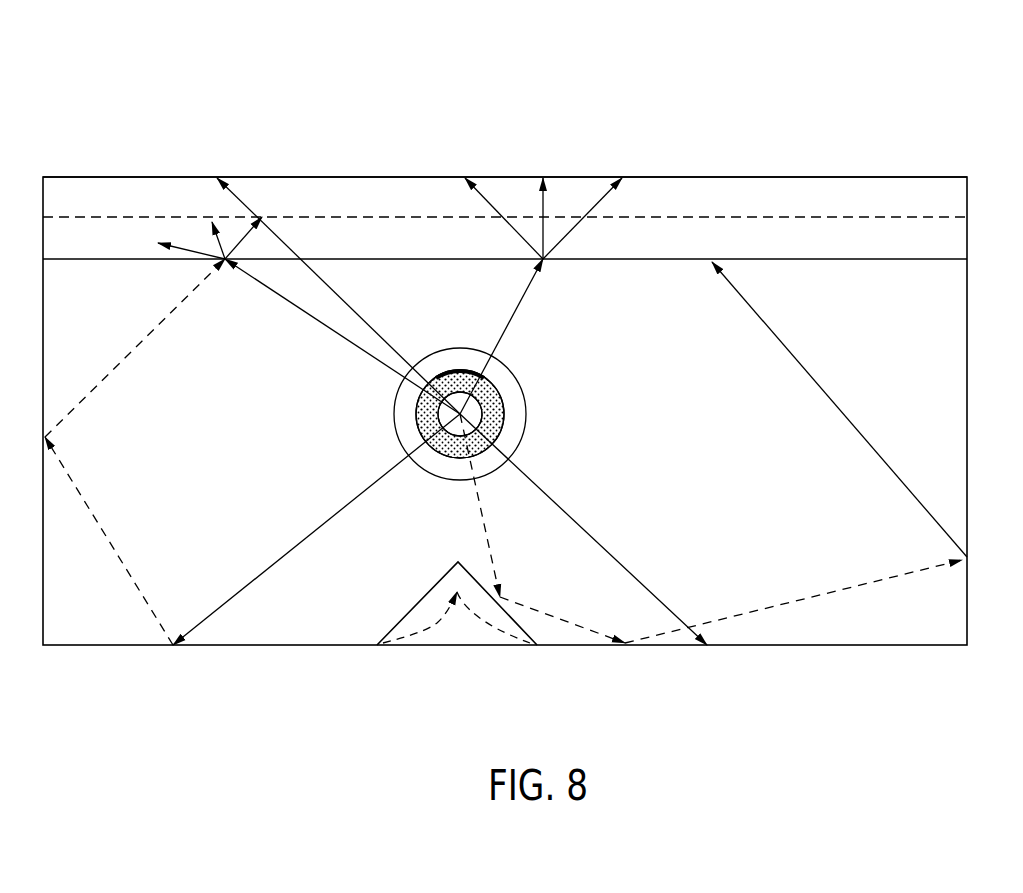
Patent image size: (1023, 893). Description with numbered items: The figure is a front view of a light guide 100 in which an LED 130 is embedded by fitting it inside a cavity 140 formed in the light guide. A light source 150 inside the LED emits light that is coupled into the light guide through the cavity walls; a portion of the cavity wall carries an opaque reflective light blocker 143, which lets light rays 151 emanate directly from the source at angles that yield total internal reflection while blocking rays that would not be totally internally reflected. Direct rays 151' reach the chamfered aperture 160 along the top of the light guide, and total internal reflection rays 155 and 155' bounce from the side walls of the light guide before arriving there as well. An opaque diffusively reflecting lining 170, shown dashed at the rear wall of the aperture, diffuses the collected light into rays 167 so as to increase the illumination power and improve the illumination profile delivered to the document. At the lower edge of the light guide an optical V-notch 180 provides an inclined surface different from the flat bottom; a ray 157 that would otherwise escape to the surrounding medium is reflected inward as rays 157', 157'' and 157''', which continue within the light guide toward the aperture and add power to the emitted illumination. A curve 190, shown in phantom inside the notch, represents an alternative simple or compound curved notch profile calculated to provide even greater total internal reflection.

The light guide 100 is at (670, 118).
The chamfered aperture 160 is at (830, 202).
The opaque diffusively reflecting lining 170 is at (940, 247).
The cavity 140 is at (510, 433).
The LED 130 is at (497, 415).
The light source 150 is at (472, 407).
The light blocker 143 is at (460, 368).
The light rays 151 is at (449, 452).
The direct rays 151' is at (338, 296).
The diffused rays 167 is at (213, 225).
The total internal reflection rays 155 is at (109, 541).
The total internal reflection ray 155' is at (135, 348).
The ray enhanced by V-notch 157 is at (503, 505).
The ray reflected by V-notch 157' is at (562, 650).
The ray reflected by V-notch 157'' is at (793, 577).
The ray reflected by V-notch 157''' is at (839, 409).
The optical V-notch 180 is at (385, 633).
The curve 190 is at (438, 628).